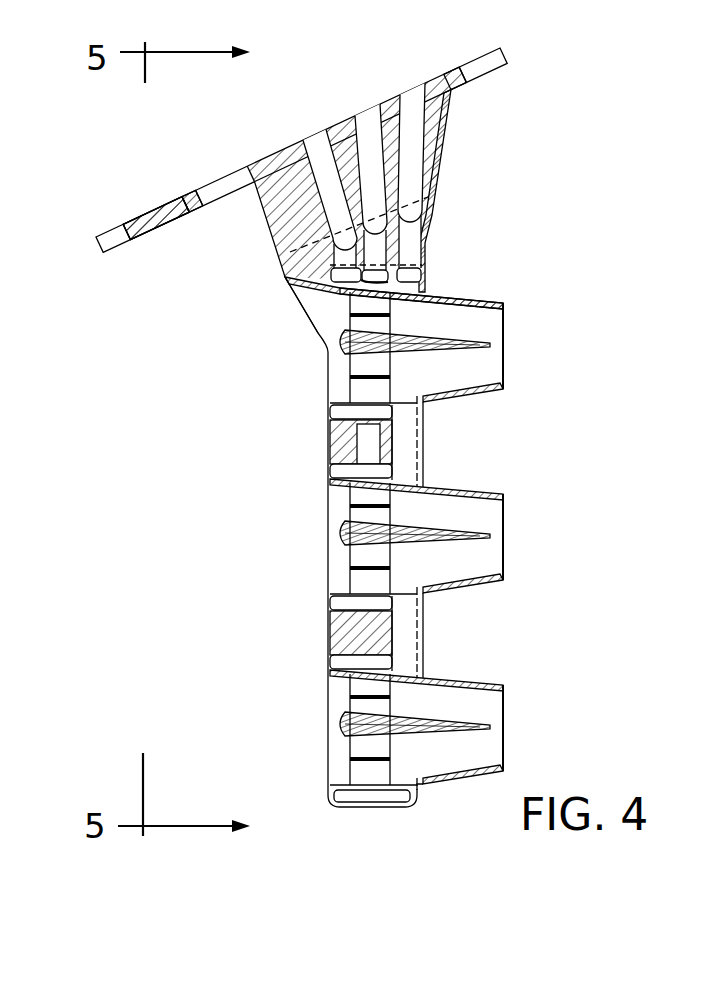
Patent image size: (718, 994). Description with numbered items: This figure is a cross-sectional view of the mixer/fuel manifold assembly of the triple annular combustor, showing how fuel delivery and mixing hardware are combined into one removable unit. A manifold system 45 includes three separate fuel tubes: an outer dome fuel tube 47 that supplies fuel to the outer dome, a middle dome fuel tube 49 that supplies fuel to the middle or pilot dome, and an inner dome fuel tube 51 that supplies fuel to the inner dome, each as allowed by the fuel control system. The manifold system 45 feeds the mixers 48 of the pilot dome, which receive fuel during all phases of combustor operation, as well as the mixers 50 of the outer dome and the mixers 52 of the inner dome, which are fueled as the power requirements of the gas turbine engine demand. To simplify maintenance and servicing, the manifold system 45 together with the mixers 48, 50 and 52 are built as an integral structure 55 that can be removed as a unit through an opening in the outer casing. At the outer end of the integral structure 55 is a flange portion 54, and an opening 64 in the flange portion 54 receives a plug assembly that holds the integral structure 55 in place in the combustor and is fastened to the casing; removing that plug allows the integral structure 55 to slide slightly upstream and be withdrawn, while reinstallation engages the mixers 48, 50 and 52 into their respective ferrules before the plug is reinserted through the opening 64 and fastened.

The manifold system 45 is at (450, 136).
The outer dome fuel tube 47 is at (322, 158).
The mixers 48 is at (507, 518).
The middle dome fuel tube 49 is at (367, 127).
The mixers 50 is at (507, 327).
The inner dome fuel tube 51 is at (422, 108).
The mixers 52 is at (512, 700).
The flange portion 54 is at (155, 229).
The integral structure 55 is at (176, 178).
The opening 64 is at (190, 210).